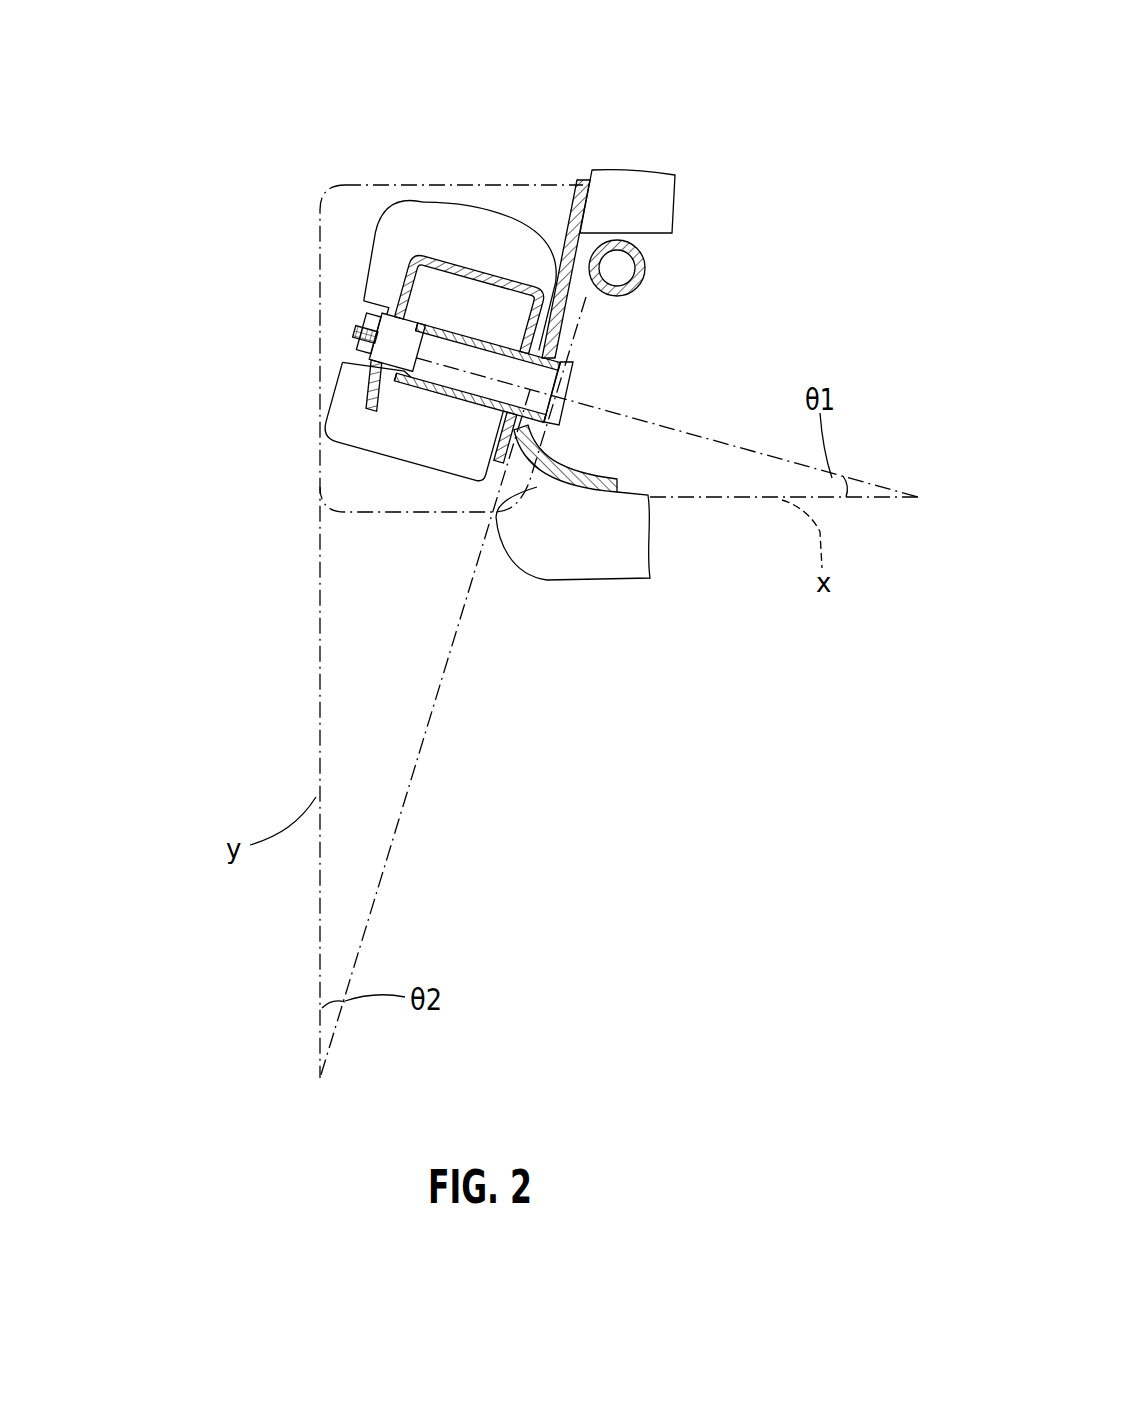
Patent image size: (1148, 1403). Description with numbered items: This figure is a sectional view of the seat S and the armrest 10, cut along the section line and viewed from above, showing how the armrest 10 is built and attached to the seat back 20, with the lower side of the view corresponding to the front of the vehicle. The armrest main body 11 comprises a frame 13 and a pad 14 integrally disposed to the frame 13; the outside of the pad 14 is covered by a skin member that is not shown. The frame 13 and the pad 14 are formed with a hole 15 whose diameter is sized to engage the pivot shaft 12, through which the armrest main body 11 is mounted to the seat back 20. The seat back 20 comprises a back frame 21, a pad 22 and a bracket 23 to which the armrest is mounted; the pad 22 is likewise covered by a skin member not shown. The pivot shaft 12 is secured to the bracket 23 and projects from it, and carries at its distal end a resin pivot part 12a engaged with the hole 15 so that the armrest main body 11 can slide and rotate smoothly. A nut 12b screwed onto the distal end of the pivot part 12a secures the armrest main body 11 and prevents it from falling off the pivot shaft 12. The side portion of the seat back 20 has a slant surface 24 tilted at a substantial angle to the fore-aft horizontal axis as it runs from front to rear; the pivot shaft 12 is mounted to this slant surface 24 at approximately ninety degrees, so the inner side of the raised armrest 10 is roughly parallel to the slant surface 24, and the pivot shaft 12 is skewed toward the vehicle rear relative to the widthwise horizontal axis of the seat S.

The seat S is at (260, 194).
The armrest 10 is at (466, 194).
The armrest main body 11 is at (368, 266).
The pivot shaft 12 is at (443, 384).
The pivot part 12a is at (372, 367).
The nut 12b is at (366, 350).
The frame 13 is at (400, 262).
The pad 14 is at (418, 216).
The hole 15 is at (352, 314).
The seat back 20 is at (648, 172).
The back frame 21 is at (646, 280).
The pad 22 is at (662, 207).
The bracket 23 is at (581, 476).
The slant surface 24 is at (576, 186).